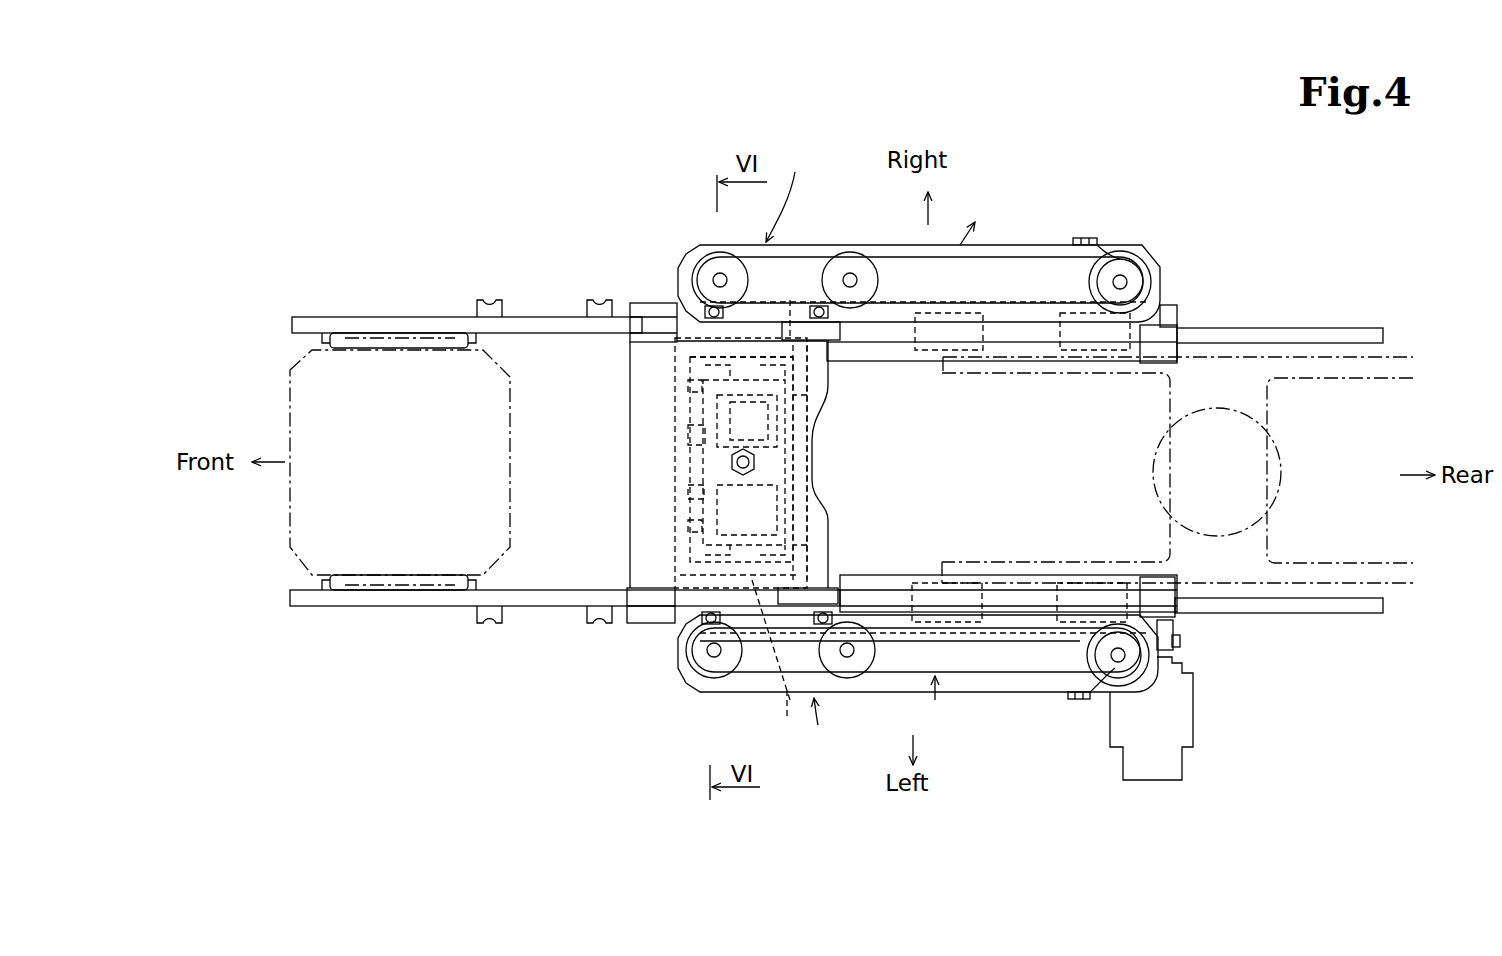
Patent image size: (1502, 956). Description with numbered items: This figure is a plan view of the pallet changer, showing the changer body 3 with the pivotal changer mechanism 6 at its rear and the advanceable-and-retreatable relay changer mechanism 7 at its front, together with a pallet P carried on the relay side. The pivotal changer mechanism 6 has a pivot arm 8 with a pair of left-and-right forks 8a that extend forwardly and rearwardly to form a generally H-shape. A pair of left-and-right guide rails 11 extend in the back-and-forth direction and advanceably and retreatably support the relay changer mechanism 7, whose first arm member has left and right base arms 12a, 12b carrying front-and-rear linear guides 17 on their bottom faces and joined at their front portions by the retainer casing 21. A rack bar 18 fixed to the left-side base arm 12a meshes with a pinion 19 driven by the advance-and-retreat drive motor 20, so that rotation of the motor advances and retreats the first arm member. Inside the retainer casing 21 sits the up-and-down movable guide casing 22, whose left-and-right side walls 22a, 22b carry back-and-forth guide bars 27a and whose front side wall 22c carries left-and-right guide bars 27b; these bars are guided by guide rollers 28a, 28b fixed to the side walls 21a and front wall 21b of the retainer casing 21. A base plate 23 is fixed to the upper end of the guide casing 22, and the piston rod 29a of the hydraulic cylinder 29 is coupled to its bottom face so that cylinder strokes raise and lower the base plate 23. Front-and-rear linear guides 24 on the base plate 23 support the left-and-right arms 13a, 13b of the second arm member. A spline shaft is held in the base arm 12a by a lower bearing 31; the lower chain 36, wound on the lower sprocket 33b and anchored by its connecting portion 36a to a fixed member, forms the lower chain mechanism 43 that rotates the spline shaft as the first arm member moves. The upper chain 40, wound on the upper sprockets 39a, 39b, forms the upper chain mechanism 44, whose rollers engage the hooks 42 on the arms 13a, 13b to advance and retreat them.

The changer body 3 is at (1222, 270).
The pivotal changer mechanism 6 is at (1305, 462).
The relay changer mechanism 7 is at (633, 285).
The pivot arm 8 is at (1255, 350).
The forks 8a is at (1395, 378).
The guide rails 11 is at (1335, 328).
The left-side base arm 12a is at (1030, 562).
The right-side base arm 12b is at (1040, 373).
The left arm 13a is at (410, 606).
The right arm 13b is at (395, 317).
The linear guides 17 is at (928, 373).
The rack bar 18 is at (968, 672).
The pinion 19 is at (1182, 640).
The advance-and-retreat drive motor 20 is at (1110, 750).
The retainer casing 21 is at (672, 556).
The left-and-right side walls 21a is at (690, 585).
The front wall 21b is at (690, 356).
The guide casing 22 is at (700, 470).
The left side wall 22a is at (747, 510).
The right side wall 22b is at (747, 421).
The front side wall 22c is at (688, 492).
The base plate 23 is at (820, 520).
The linear guides 24 is at (655, 303).
The back-and-forth guide bars 27a is at (790, 300).
The left-and-right guide bars 27b is at (688, 386).
The guide rollers 28a is at (807, 395).
The guide rollers 28b is at (688, 436).
The hydraulic cylinder 29 is at (790, 428).
The piston rod 29a is at (755, 462).
The lower bearing 31 is at (1150, 270).
The lower sprocket 33b is at (1125, 259).
The lower chain 36 is at (1010, 257).
The connecting portion 36a is at (1085, 238).
The upper sprocket 39a is at (858, 252).
The upper sprocket 39b is at (728, 252).
The upper chain 40 is at (820, 245).
The hooks 42 is at (490, 300).
The lower chain mechanism 43 is at (963, 237).
The upper chain mechanism 44 is at (801, 452).
The pallet P is at (512, 470).